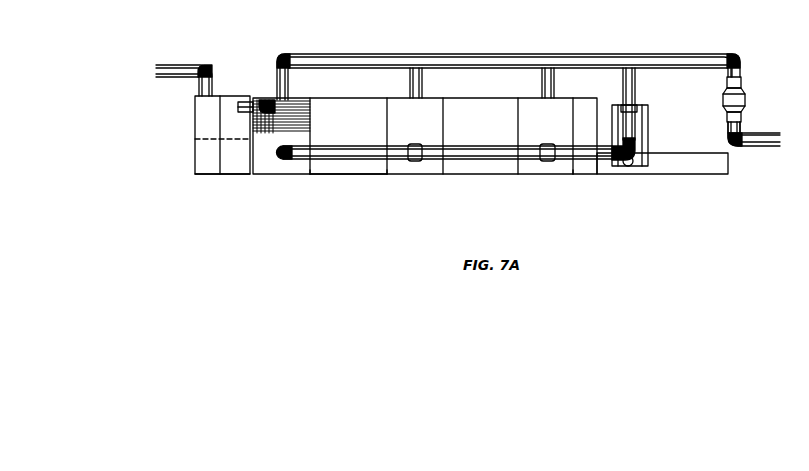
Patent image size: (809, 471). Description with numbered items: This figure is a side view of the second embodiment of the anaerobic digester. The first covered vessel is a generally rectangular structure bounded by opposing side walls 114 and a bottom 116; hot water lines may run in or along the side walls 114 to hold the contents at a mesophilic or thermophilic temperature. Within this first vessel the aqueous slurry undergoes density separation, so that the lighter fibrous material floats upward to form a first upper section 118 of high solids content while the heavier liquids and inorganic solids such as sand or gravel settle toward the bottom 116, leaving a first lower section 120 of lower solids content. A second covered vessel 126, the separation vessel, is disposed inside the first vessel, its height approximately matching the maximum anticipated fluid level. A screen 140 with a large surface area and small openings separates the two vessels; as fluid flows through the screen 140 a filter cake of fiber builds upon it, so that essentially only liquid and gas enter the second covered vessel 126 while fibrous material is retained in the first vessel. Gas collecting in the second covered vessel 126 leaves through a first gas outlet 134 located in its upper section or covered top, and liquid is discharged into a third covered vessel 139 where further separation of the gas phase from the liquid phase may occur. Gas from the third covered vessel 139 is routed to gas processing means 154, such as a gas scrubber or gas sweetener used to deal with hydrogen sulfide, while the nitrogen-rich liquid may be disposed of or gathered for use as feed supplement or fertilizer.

The side walls 114 is at (364, 133).
The bottom 116 is at (347, 174).
The first upper section 118 is at (220, 120).
The first lower section 120 is at (220, 157).
The second covered vessel 126 is at (323, 174).
The first gas outlet 134 is at (423, 83).
The third covered vessel 139 is at (650, 130).
The screen 140 is at (288, 117).
The gas processing means 154 is at (744, 101).